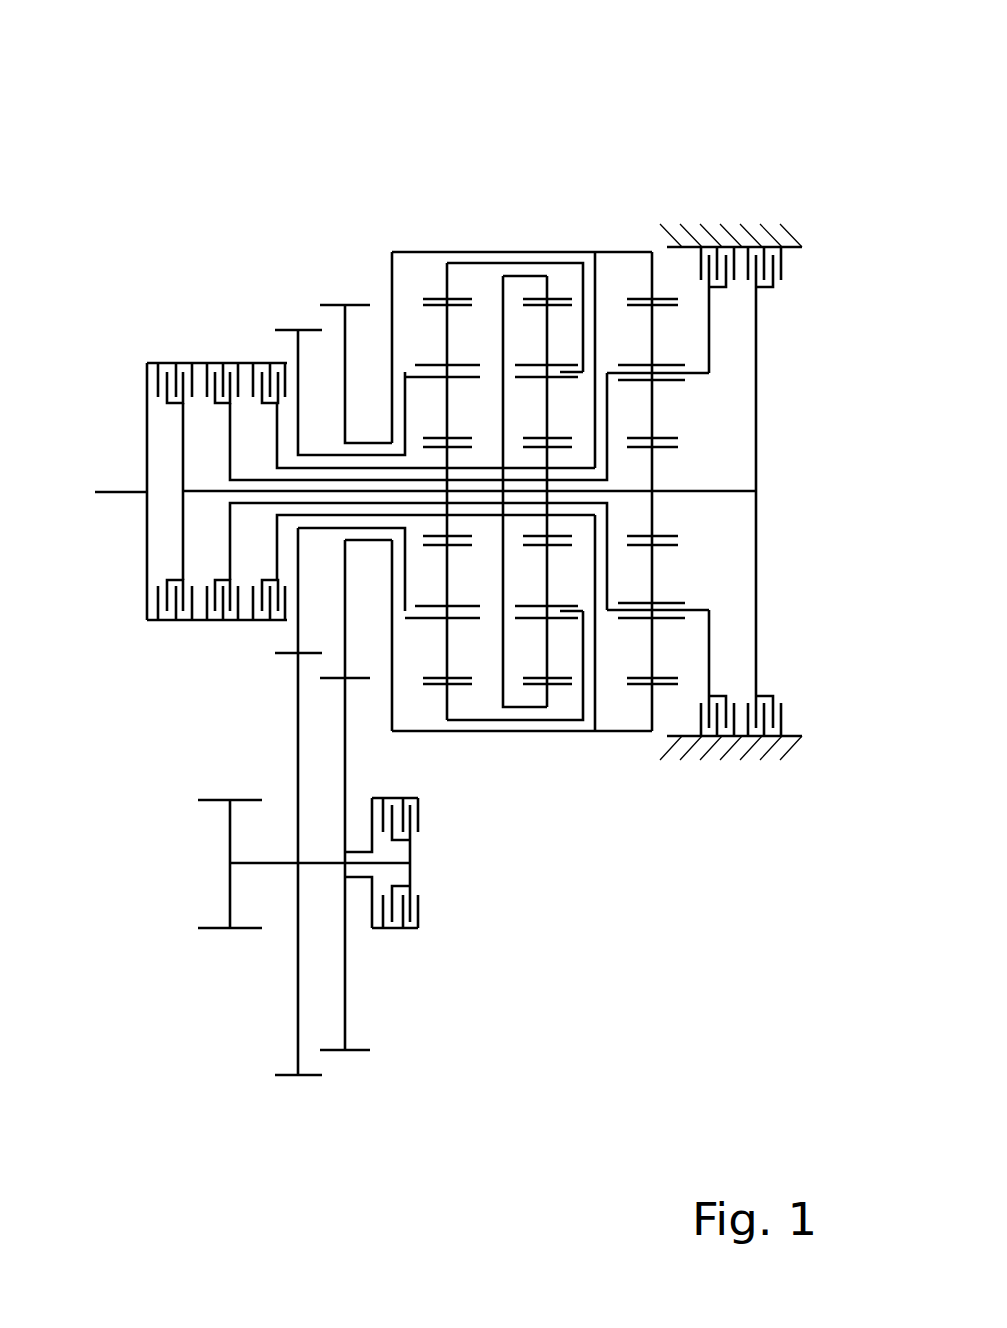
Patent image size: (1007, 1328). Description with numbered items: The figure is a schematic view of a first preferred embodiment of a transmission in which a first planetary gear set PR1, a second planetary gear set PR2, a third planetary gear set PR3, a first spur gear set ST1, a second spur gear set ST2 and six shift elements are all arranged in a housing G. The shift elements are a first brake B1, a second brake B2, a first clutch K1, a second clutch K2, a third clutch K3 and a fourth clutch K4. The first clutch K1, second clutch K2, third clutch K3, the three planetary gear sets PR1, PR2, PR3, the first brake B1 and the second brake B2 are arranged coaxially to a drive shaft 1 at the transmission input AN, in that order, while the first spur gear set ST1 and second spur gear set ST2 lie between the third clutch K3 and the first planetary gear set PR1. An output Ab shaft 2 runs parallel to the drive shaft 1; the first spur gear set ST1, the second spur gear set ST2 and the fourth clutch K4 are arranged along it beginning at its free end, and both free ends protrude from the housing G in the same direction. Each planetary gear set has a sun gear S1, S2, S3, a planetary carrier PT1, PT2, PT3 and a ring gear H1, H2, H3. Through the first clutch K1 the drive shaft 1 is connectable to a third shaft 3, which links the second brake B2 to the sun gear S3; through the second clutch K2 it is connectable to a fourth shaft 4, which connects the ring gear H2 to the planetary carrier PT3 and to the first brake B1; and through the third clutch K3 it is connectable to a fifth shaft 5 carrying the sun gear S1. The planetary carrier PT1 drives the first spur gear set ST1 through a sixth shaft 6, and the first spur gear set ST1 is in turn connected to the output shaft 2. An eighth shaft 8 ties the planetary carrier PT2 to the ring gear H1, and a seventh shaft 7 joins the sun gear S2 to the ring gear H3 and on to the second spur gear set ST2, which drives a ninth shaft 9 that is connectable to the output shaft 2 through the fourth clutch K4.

The transmission input AN is at (413, 491).
The output Ab is at (227, 832).
The drive shaft 1 is at (136, 492).
The output shaft 2 is at (275, 865).
The third shaft 3 is at (183, 460).
The fourth shaft 4 is at (230, 420).
The fifth shaft 5 is at (277, 545).
The sixth shaft 6 is at (328, 528).
The seventh shaft 7 is at (574, 734).
The eighth shaft 8 is at (522, 724).
The ninth shaft 9 is at (372, 900).
The first clutch K1 is at (170, 353).
The second clutch K2 is at (222, 353).
The third clutch K3 is at (268, 353).
The fourth clutch K4 is at (402, 940).
The first brake B1 is at (703, 215).
The second brake B2 is at (760, 215).
The housing G is at (772, 227).
The planetary carrier of the first planetary gear set PT1 is at (423, 363).
The planetary carrier of the second planetary gear set PT2 is at (525, 362).
The planetary carrier of the third planetary gear set PT3 is at (673, 364).
The ring gear of the first planetary gear set H1 is at (433, 295).
The ring gear of the second planetary gear set H2 is at (555, 297).
The ring gear of the third planetary gear set H3 is at (637, 295).
The sun gear of the first planetary gear set S1 is at (448, 447).
The sun gear of the second planetary gear set S2 is at (560, 447).
The sun gear of the third planetary gear set S3 is at (677, 442).
The first planetary gear set PR1 is at (447, 218).
The second planetary gear set PR2 is at (547, 218).
The third planetary gear set PR3 is at (652, 218).
The first spur gear set ST1 is at (298, 318).
The second spur gear set ST2 is at (345, 295).